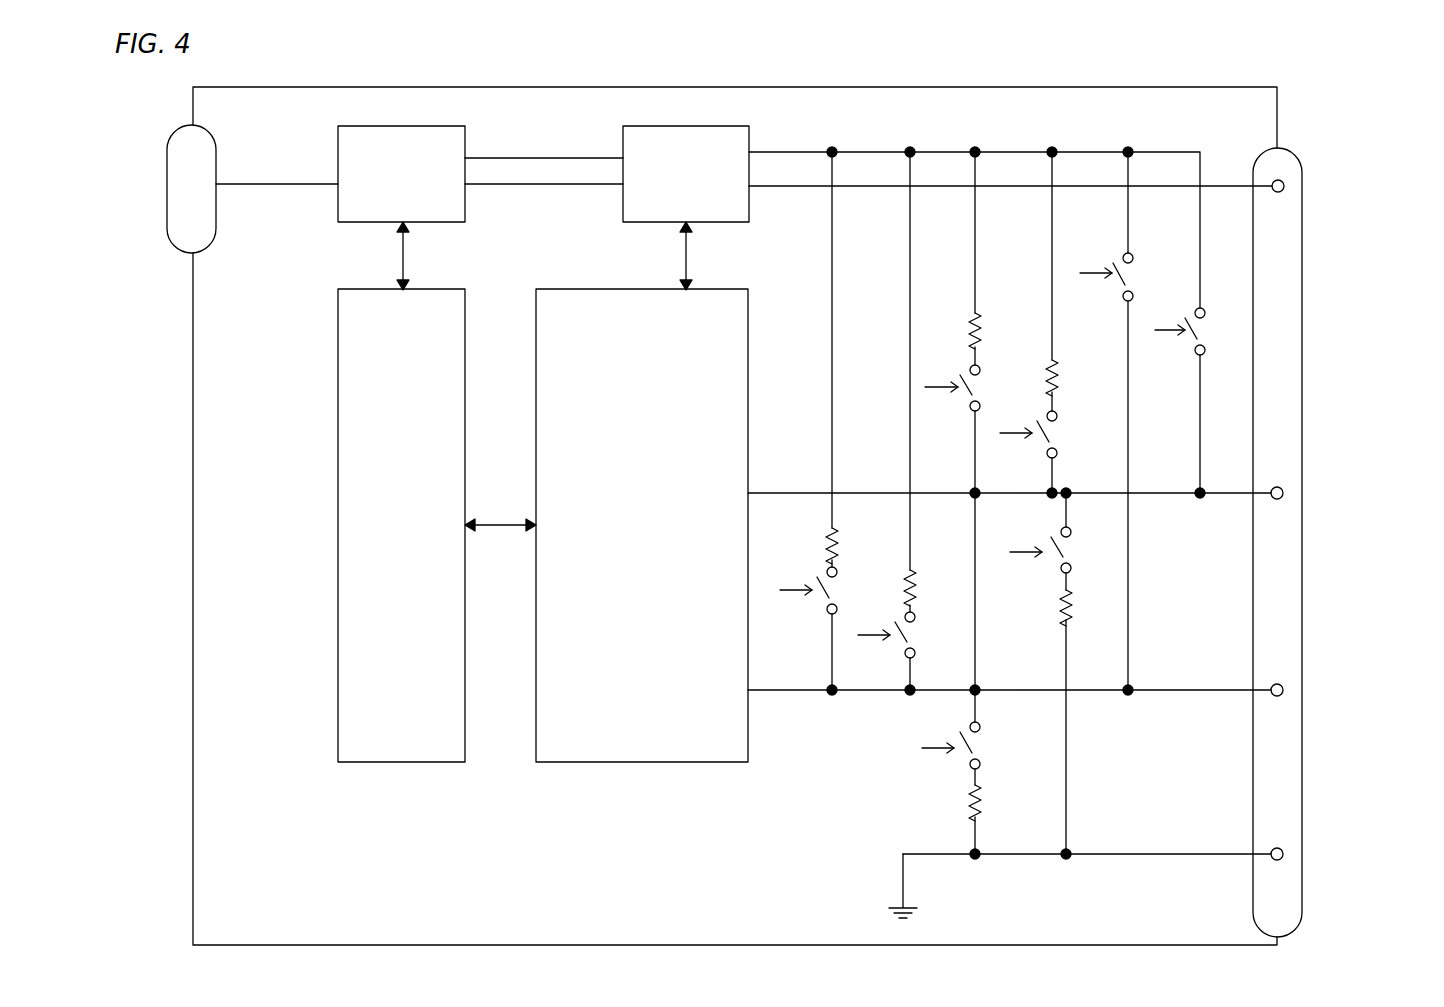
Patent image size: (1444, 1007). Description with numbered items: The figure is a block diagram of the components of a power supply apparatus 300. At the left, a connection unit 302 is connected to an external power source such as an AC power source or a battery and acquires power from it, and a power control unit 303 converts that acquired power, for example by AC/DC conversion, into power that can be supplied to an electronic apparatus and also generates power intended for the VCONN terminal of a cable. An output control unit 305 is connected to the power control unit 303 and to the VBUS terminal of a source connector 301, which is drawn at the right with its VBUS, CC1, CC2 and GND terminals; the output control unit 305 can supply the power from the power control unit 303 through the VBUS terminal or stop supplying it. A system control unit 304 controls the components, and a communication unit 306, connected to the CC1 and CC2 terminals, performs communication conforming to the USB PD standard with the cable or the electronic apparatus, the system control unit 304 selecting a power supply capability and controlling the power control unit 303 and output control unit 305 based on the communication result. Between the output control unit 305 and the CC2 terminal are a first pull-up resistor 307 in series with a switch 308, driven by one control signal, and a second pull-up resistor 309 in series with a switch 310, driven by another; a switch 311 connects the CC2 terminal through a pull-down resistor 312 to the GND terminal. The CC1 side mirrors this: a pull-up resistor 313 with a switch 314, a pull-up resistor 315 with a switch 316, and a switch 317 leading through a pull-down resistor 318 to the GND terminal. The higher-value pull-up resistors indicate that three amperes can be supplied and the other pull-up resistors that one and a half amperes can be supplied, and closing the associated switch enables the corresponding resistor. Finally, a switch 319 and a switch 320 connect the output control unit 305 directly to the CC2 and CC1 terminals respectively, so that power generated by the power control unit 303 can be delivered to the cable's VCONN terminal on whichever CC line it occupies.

The power supply apparatus 300 is at (830, 87).
The source connector 301 is at (1296, 150).
The connection unit 302 is at (216, 140).
The power control unit 303 is at (467, 138).
The system control unit 304 is at (457, 288).
The output control unit 305 is at (750, 136).
The communication unit 306 is at (712, 288).
The pull-up resistor 307 is at (840, 518).
The switch 308 is at (823, 612).
The pull-up resistor 309 is at (913, 570).
The switch 310 is at (905, 645).
The switch 311 is at (983, 737).
The pull-down resistor 312 is at (962, 793).
The pull-up resistor 313 is at (976, 306).
The switch 314 is at (970, 403).
The pull-up resistor 315 is at (1058, 358).
The switch 316 is at (1043, 443).
The switch 317 is at (1064, 550).
The pull-down resistor 318 is at (1060, 623).
The switch 319 is at (1130, 277).
The switch 320 is at (1200, 335).